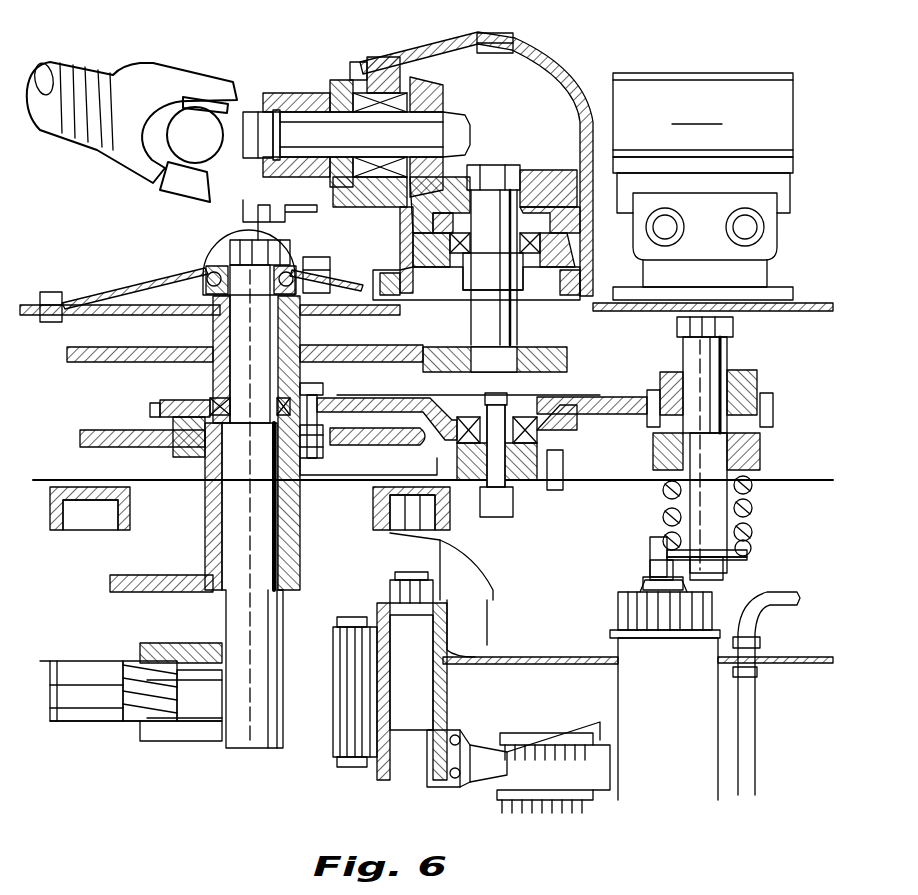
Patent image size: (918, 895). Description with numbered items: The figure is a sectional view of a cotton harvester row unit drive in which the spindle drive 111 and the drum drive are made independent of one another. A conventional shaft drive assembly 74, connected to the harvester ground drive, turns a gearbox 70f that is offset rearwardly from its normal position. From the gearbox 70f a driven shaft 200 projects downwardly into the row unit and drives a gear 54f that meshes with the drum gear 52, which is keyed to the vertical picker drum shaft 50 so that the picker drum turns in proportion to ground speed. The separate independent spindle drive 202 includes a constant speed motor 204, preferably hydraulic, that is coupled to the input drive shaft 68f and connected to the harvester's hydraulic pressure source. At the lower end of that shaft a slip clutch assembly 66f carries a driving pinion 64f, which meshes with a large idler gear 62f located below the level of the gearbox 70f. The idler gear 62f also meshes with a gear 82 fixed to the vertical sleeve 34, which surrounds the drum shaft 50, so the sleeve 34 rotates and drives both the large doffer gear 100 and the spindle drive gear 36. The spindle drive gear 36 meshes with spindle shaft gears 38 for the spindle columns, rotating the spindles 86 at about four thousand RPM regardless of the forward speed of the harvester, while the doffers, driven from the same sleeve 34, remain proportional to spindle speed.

The shaft drive assembly 74 is at (228, 70).
The gearbox 70f is at (500, 18).
The driven shaft 200 is at (522, 172).
The independent spindle drive 202 is at (706, 159).
The constant speed motor 204 is at (699, 111).
The drum gear 52 is at (385, 333).
The gear 54f is at (578, 355).
The spindle drive 111 is at (778, 380).
The large idler gear 62f is at (400, 390).
The driving pinion 64f is at (775, 404).
The gear 82 is at (150, 405).
The large gear 100 is at (120, 432).
The vertical sleeve 34 is at (300, 502).
The vertical picker drum shaft 50 is at (240, 545).
The input drive shaft 68f is at (752, 527).
The slip clutch assembly 66f is at (768, 545).
The spindle shaft gear 38 is at (465, 593).
The spindle drive gear 36 is at (150, 598).
The spindles 86 is at (530, 760).